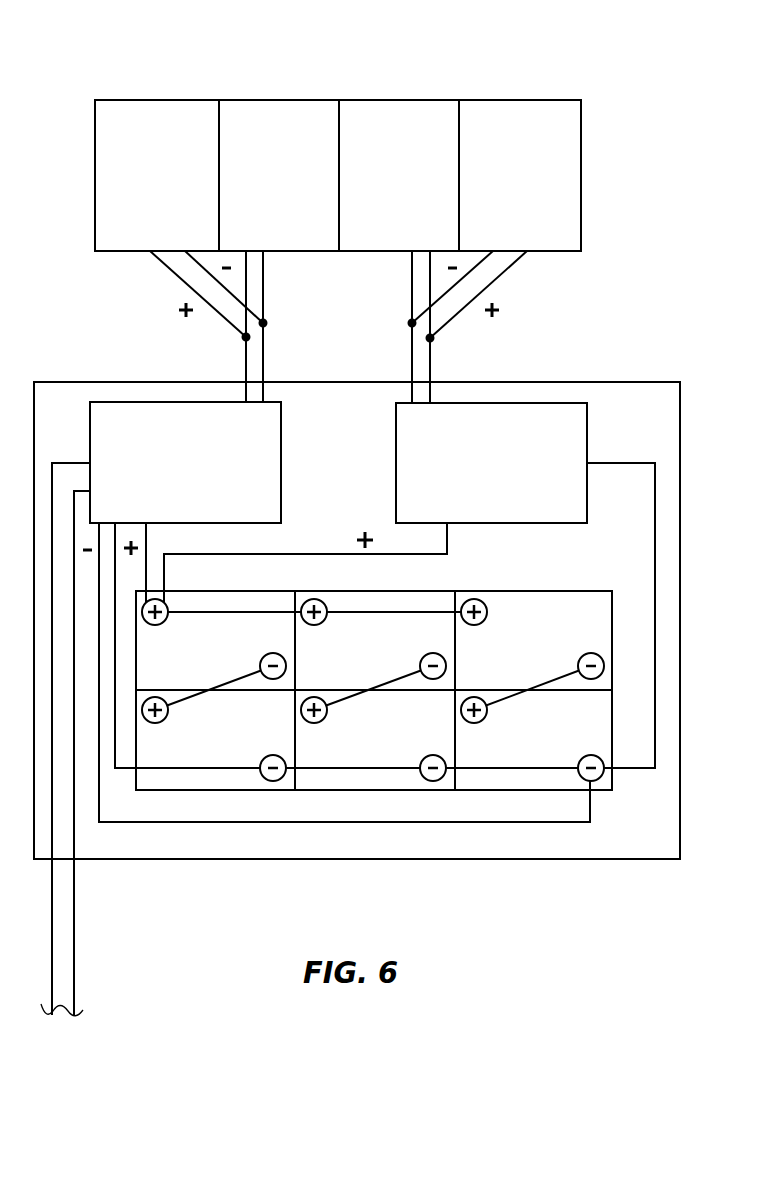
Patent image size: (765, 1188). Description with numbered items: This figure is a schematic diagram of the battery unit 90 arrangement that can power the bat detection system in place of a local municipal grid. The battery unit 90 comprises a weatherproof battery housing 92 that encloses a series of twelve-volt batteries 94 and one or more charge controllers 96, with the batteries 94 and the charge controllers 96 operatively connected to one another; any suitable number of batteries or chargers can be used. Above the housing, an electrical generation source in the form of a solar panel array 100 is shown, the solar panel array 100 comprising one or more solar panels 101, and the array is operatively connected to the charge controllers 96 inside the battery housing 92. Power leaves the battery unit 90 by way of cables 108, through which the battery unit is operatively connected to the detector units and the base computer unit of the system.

The solar panel array 100 is at (367, 518).
The solar panel 101 is at (140, 184).
The battery unit 90 is at (364, 647).
The battery housing 92 is at (627, 382).
The charge controller 96 is at (170, 472).
The battery 94 is at (206, 649).
The cable 108 is at (74, 962).